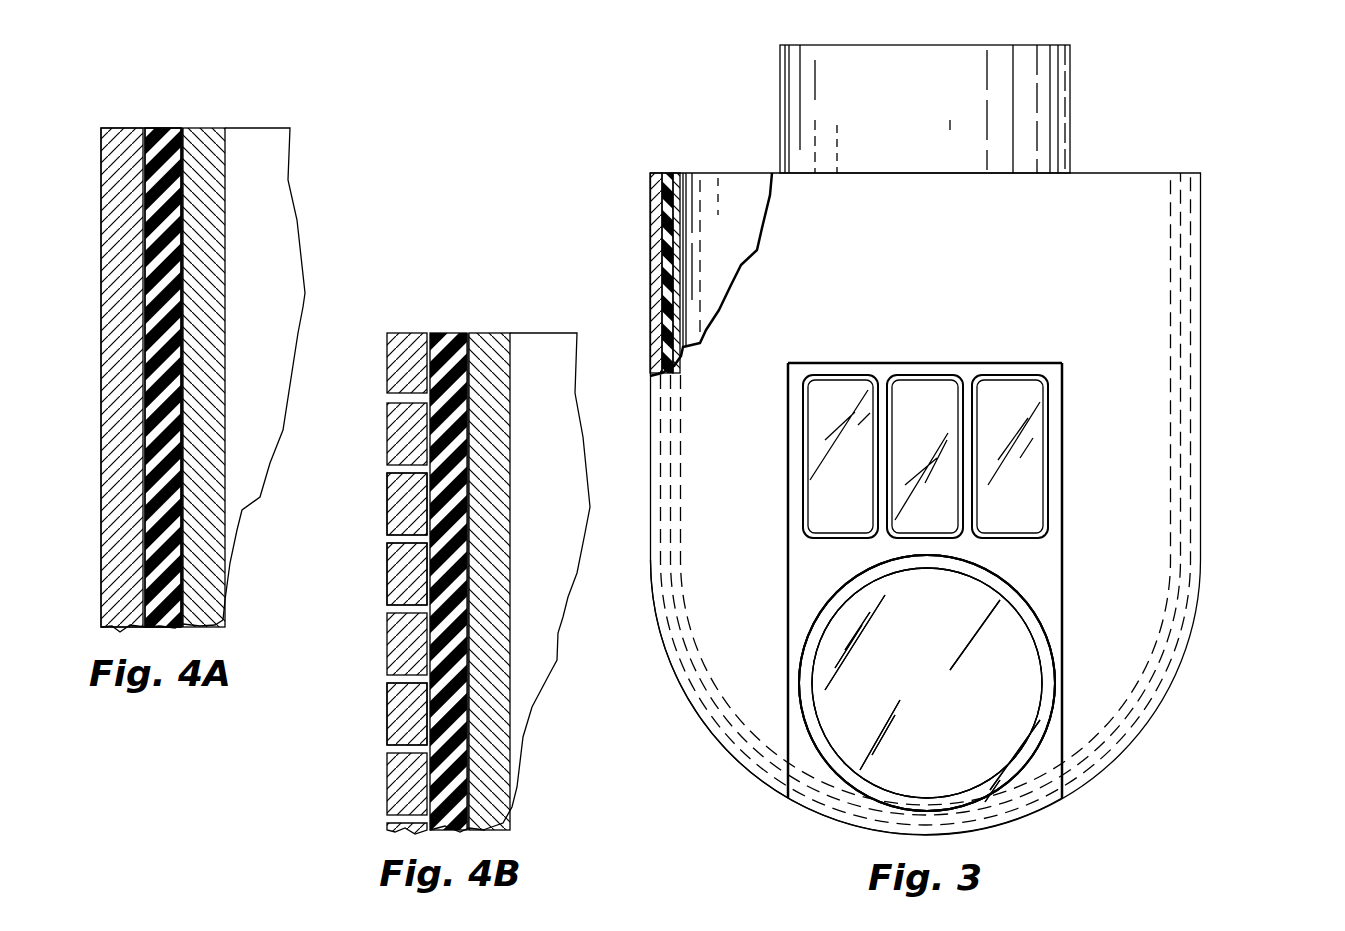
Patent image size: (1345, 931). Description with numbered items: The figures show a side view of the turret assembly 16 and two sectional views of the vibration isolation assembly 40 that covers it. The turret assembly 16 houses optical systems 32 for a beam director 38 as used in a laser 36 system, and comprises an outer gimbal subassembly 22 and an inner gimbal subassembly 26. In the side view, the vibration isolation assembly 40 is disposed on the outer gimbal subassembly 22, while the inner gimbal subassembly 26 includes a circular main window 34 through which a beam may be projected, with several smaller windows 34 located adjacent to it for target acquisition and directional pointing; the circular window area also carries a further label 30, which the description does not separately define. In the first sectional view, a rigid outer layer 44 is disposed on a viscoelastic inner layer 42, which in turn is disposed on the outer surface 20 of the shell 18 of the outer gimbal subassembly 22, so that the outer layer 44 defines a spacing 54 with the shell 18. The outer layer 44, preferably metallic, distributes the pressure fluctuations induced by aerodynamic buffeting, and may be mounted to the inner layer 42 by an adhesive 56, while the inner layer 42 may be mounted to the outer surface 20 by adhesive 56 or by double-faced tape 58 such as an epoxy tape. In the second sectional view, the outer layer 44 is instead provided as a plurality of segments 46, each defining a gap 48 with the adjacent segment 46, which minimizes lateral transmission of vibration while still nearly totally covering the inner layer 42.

In FIG. 3, the turret assembly 16 is at (1140, 219).
In FIG. 4A, the shell 18 is at (210, 128).
In FIG. 4B, the shell 18 is at (487, 333).
In FIG. 3, the shell 18 is at (678, 173).
In FIG. 4A, the outer surface 20 is at (185, 128).
In FIG. 4B, the outer surface 20 is at (467, 632).
In FIG. 4A, the outer gimbal subassembly 22 is at (296, 220).
In FIG. 4B, the outer gimbal subassembly 22 is at (577, 570).
In FIG. 3, the outer gimbal subassembly 22 is at (770, 775).
In FIG. 3, the inner gimbal subassembly 26 is at (820, 800).
In FIG. 3, the window 30 is at (1010, 640).
In FIG. 3, the optical systems 32 is at (1010, 640).
In FIG. 3, the window 34 is at (858, 425).
In FIG. 3, the laser 36 is at (973, 700).
In FIG. 3, the beam director 38 is at (973, 700).
In FIG. 4A, the vibration isolation assembly 40 is at (186, 128).
In FIG. 4B, the vibration isolation assembly 40 is at (467, 333).
In FIG. 4A, the viscoelastic inner layer 42 is at (160, 157).
In FIG. 4B, the viscoelastic inner layer 42 is at (445, 362).
In FIG. 3, the viscoelastic inner layer 42 is at (664, 173).
In FIG. 4A, the rigid outer layer 44 is at (101, 127).
In FIG. 4B, the rigid outer layer 44 is at (387, 332).
In FIG. 3, the rigid outer layer 44 is at (650, 173).
In FIG. 4B, the segments 46 is at (387, 640).
In FIG. 4B, the gap 48 is at (387, 678).
In FIG. 4A, the spacing 54 is at (182, 128).
In FIG. 4A, the adhesive 56 is at (180, 593).
In FIG. 4B, the adhesive 56 is at (465, 793).
In FIG. 4A, the double-faced tape 58 is at (147, 597).
In FIG. 4B, the double-faced tape 58 is at (428, 798).